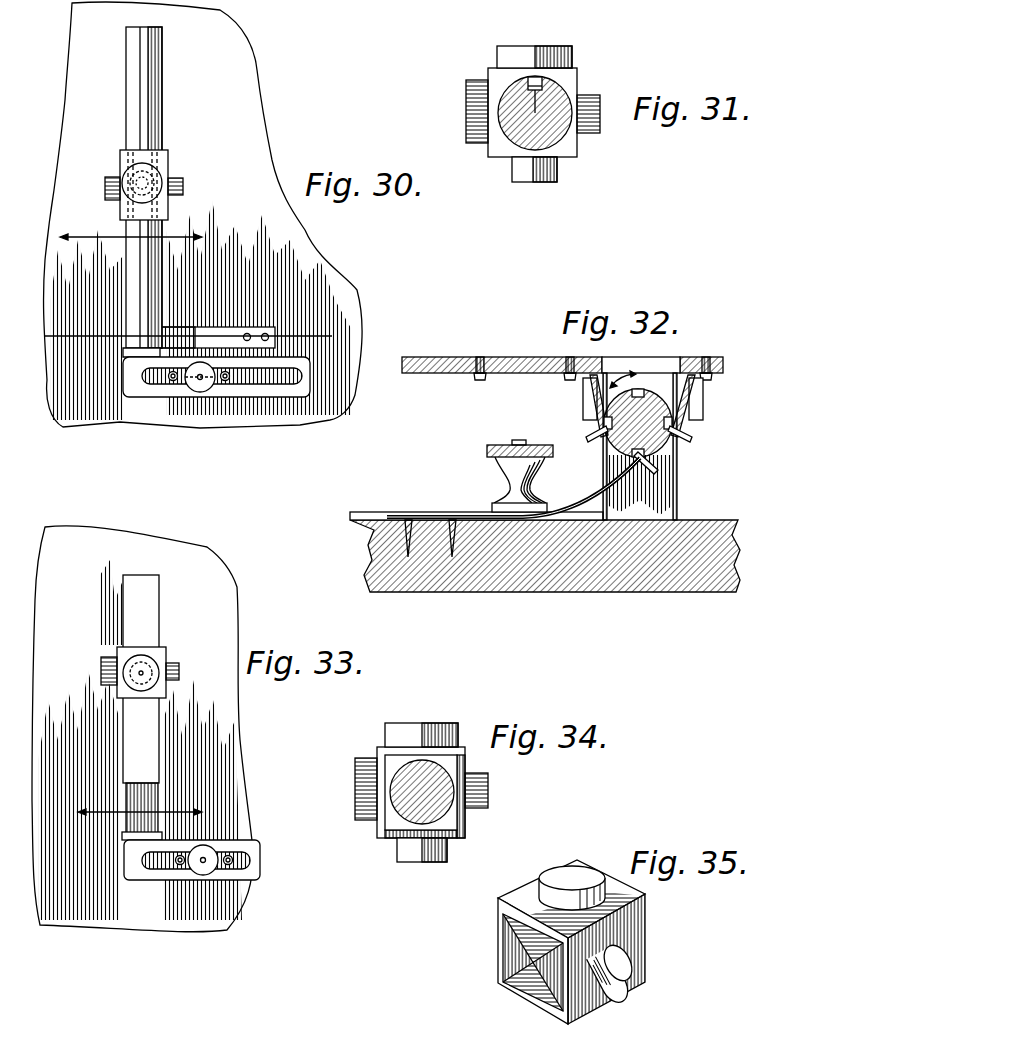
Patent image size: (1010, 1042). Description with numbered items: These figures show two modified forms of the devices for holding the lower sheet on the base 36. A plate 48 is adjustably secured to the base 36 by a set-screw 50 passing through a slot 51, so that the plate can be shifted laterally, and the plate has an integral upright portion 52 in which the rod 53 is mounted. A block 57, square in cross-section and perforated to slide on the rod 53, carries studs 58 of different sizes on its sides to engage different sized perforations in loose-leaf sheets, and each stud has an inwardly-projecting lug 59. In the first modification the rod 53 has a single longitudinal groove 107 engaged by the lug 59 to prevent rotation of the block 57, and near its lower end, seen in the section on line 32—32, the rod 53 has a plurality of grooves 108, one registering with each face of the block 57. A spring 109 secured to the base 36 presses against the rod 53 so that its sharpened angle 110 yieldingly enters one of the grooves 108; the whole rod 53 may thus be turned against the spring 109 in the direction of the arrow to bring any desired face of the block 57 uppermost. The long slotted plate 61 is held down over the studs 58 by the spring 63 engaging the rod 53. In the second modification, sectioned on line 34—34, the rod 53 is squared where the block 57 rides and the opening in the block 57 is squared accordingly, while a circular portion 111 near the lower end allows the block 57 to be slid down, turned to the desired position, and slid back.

In FIG. 30, the section line 32— 32 is at (195, 339).
In FIG. 30, the section line 34— 34 is at (140, 243).
In FIG. 33, the section line 34— 34 is at (139, 815).
In FIG. 30, the base 36 is at (328, 292).
In FIG. 32, the base 36 is at (690, 581).
In FIG. 33, the base 36 is at (225, 606).
In FIG. 30, the plate 48 is at (270, 394).
In FIG. 32, the plate 48 is at (375, 516).
In FIG. 33, the plate 48 is at (128, 859).
In FIG. 30, the set-screw 50 is at (206, 382).
In FIG. 32, the set-screw 50 is at (497, 447).
In FIG. 33, the set-screw 50 is at (205, 867).
In FIG. 30, the slot 51 is at (282, 382).
In FIG. 33, the slot 51 is at (248, 862).
In FIG. 30, the upright portion 52 is at (126, 355).
In FIG. 32, the upright portion 52 is at (672, 474).
In FIG. 33, the upright portion 52 is at (124, 837).
In FIG. 30, the rod 53 is at (160, 132).
In FIG. 31, the rod 53 is at (522, 139).
In FIG. 33, the rod 53 is at (147, 617).
In FIG. 34, the rod 53 is at (395, 765).
In FIG. 30, the block 57 is at (166, 166).
In FIG. 31, the block 57 is at (570, 81).
In FIG. 33, the block 57 is at (161, 656).
In FIG. 34, the block 57 is at (382, 753).
In FIG. 35, the block 57 is at (520, 899).
In FIG. 30, the stud 58 is at (120, 183).
In FIG. 31, the stud 58 is at (535, 56).
In FIG. 33, the stud 58 is at (135, 660).
In FIG. 34, the stud 58 is at (418, 731).
In FIG. 35, the stud 58 is at (548, 877).
In FIG. 30, the lug 59 is at (140, 192).
In FIG. 31, the lug 59 is at (538, 81).
In FIG. 32, the plate 61 is at (495, 366).
In FIG. 32, the spring 63 is at (585, 401).
In FIG. 30, the longitudinal groove 107 is at (142, 96).
In FIG. 31, the longitudinal groove 107 is at (535, 95).
In FIG. 32, the groove 108 is at (642, 392).
In FIG. 30, the spring 109 is at (218, 332).
In FIG. 32, the spring 109 is at (565, 501).
In FIG. 32, the sharpened angle 110 is at (660, 471).
In FIG. 33, the circular portion 111 is at (150, 796).
In FIG. 34, the circular portion 111 is at (402, 813).